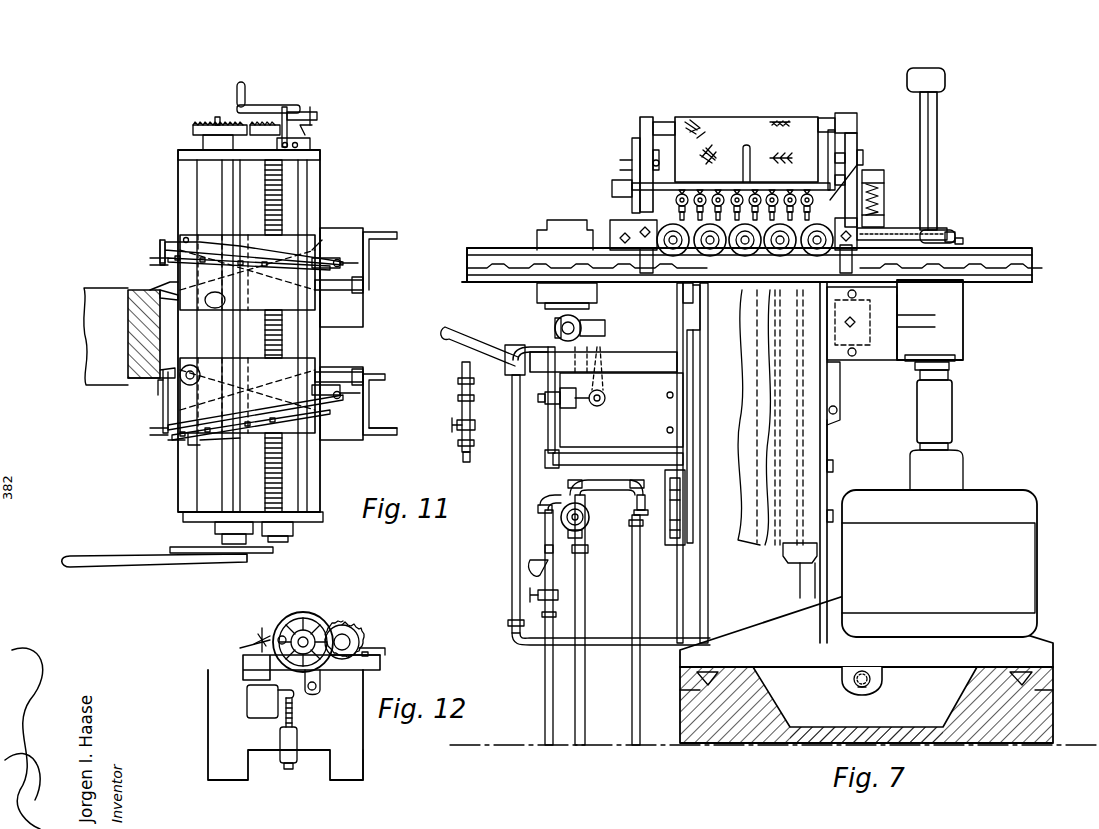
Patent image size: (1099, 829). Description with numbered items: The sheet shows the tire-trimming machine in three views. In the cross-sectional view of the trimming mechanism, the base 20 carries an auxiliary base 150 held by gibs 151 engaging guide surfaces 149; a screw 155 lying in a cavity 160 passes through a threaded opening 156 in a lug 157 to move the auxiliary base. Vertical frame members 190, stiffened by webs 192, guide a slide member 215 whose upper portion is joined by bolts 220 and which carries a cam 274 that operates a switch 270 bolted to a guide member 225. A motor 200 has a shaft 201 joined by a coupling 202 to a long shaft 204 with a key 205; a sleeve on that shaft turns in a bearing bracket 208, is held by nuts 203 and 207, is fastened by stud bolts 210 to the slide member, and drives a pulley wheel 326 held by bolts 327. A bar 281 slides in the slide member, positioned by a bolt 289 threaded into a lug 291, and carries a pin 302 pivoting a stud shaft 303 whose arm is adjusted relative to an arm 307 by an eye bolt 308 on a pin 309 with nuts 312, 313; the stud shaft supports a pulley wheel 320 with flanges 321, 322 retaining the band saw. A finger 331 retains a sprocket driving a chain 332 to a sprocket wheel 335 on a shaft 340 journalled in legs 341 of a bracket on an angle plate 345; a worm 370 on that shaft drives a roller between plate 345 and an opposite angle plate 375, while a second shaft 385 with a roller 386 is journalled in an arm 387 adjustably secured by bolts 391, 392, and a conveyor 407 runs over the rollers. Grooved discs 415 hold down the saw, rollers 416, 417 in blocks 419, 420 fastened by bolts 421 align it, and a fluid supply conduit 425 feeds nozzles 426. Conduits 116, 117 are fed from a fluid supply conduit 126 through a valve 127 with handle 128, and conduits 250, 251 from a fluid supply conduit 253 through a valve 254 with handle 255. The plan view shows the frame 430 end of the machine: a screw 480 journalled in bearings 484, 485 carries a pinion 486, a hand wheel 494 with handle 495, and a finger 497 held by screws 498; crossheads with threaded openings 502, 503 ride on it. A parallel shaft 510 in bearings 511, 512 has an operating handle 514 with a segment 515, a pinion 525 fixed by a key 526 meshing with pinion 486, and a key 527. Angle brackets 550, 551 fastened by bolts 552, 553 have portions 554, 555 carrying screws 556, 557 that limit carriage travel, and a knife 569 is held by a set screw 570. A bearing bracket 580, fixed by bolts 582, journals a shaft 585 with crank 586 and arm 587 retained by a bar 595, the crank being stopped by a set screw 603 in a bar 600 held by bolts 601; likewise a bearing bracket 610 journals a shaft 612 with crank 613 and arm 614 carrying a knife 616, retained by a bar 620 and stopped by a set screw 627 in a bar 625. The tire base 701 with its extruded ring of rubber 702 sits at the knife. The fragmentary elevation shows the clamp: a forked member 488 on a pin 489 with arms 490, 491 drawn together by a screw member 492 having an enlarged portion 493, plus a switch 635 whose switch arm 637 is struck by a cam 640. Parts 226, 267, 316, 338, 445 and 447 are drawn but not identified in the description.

In FIG. 7, the base 20 is at (1035, 733).
In FIG. 7, the conduit 116 is at (640, 668).
In FIG. 7, the conduit 117 is at (588, 700).
In FIG. 7, the fluid supply conduit 126 is at (545, 705).
In FIG. 7, the valve 127 is at (588, 530).
In FIG. 7, the handle 128 is at (535, 578).
In FIG. 7, the guide surfaces 149 is at (710, 672).
In FIG. 7, the auxiliary base 150 is at (1053, 648).
In FIG. 7, the gibs 151 is at (697, 685).
In FIG. 7, the screw 155 is at (870, 690).
In FIG. 7, the threaded opening 156 is at (845, 685).
In FIG. 7, the lug 157 is at (871, 677).
In FIG. 7, the cavity 160 is at (948, 667).
In FIG. 7, the frame member 190 is at (888, 296).
In FIG. 7, the webs 192 is at (817, 598).
In FIG. 7, the motor 200 is at (1037, 578).
In FIG. 7, the shaft 201 is at (950, 446).
In FIG. 7, the coupling 202 is at (952, 415).
In FIG. 7, the nut 203 is at (950, 366).
In FIG. 7, the shaft 204 is at (937, 150).
In FIG. 7, the key 205 is at (937, 128).
In FIG. 7, the nut 207 is at (948, 376).
In FIG. 7, the bearing bracket 208 is at (963, 320).
In FIG. 7, the stud bolts 210 is at (880, 360).
In FIG. 7, the slide member 215 is at (780, 462).
In FIG. 7, the bolts 220 is at (840, 408).
In FIG. 7, the guide member 225 is at (618, 451).
In FIG. 7, the lug 226 is at (833, 475).
In FIG. 7, the conduit 250 is at (512, 520).
In FIG. 7, the conduit 251 is at (552, 468).
In FIG. 7, the fluid supply conduit 253 is at (463, 458).
In FIG. 7, the valve 254 is at (500, 390).
In FIG. 7, the handle 255 is at (470, 342).
In FIG. 7, the pipe loop 267 is at (606, 480).
In FIG. 7, the switch 270 is at (665, 545).
In FIG. 7, the cam 274 is at (645, 495).
In FIG. 7, the bar 281 is at (610, 367).
In FIG. 7, the bolt 289 is at (741, 410).
In FIG. 7, the lug 291 is at (760, 416).
In FIG. 7, the pin 302 is at (555, 323).
In FIG. 7, the stud shaft 303 is at (525, 340).
In FIG. 7, the arm 307 is at (605, 395).
In FIG. 7, the eye bolt 308 is at (578, 405).
In FIG. 7, the pin 309 is at (600, 406).
In FIG. 7, the nut 312 is at (545, 402).
In FIG. 7, the nut 313 is at (560, 404).
In FIG. 7, the block 316 is at (537, 292).
In FIG. 7, the pulley wheel 320 is at (537, 240).
In FIG. 7, the flange 321 is at (469, 248).
In FIG. 7, the flange 322 is at (466, 282).
In FIG. 7, the pulley wheel 326 is at (1032, 250).
In FIG. 7, the bolts 327 is at (963, 241).
In FIG. 7, the finger 331 is at (958, 233).
In FIG. 7, the chain 332 is at (925, 238).
In FIG. 7, the sprocket wheel 335 is at (902, 230).
In FIG. 7, the plate 338 is at (838, 132).
In FIG. 7, the shaft 340 is at (884, 186).
In FIG. 7, the legs 341 is at (884, 175).
In FIG. 7, the angle plate 345 is at (857, 150).
In FIG. 7, the worm 370 is at (878, 196).
In FIG. 7, the angle plate 375 is at (632, 140).
In FIG. 7, the shaft 385 is at (852, 112).
In FIG. 7, the roller 386 is at (826, 118).
In FIG. 7, the arm 387 is at (645, 117).
In FIG. 7, the bolt 391 is at (662, 157).
In FIG. 7, the bolt 392 is at (845, 157).
In FIG. 7, the belt or conveyor 407 is at (795, 125).
In FIG. 7, the grooved discs 415 is at (860, 164).
In FIG. 7, the roller 416 is at (645, 270).
In FIG. 7, the roller 417 is at (764, 444).
In FIG. 7, the block 419 is at (812, 205).
In FIG. 7, the block 420 is at (615, 225).
In FIG. 7, the bolts 421 is at (612, 235).
In FIG. 7, the fluid supply conduit 425 is at (700, 195).
In FIG. 7, the nozzles 426 is at (740, 195).
In FIG. 12, the frame 430 is at (208, 778).
In FIG. 12, the frame leg 445 is at (363, 765).
In FIG. 12, the pump 447 is at (284, 765).
In FIG. 11, the screw 480 is at (282, 190).
In FIG. 12, the screw 480 is at (305, 630).
In FIG. 11, the bearing 484 is at (300, 143).
In FIG. 11, the bearing 485 is at (293, 530).
In FIG. 11, the pinion 486 is at (310, 128).
In FIG. 12, the forked member 488 is at (292, 705).
In FIG. 12, the pin 489 is at (315, 695).
In FIG. 12, the arm 490 is at (340, 635).
In FIG. 12, the arm 491 is at (282, 636).
In FIG. 12, the screw member 492 is at (255, 645).
In FIG. 12, the enlarged outer cylindrical portion 493 is at (262, 637).
In FIG. 11, the hand wheel 494 is at (262, 105).
In FIG. 12, the hand wheel 494 is at (322, 618).
In FIG. 11, the handle 495 is at (245, 88).
In FIG. 11, the finger 497 is at (290, 110).
In FIG. 11, the screws 498 is at (300, 147).
In FIG. 11, the opening 502 is at (312, 242).
In FIG. 11, the opening 503 is at (315, 365).
In FIG. 11, the shaft 510 is at (222, 470).
In FIG. 12, the shaft 510 is at (355, 638).
In FIG. 11, the bearing 511 is at (215, 148).
In FIG. 11, the bearing 512 is at (215, 527).
In FIG. 11, the operating handle 514 is at (170, 567).
In FIG. 11, the segment 515 is at (262, 554).
In FIG. 11, the pinion 525 is at (195, 130).
In FIG. 12, the pinion 525 is at (358, 652).
In FIG. 11, the key 526 is at (215, 118).
In FIG. 12, the key 526 is at (368, 654).
In FIG. 11, the key 527 is at (255, 336).
In FIG. 11, the angle bracket 550 is at (175, 240).
In FIG. 11, the angle bracket 551 is at (188, 440).
In FIG. 11, the bolts 552 is at (185, 237).
In FIG. 11, the bolts 553 is at (210, 443).
In FIG. 11, the portion 554 is at (160, 245).
In FIG. 11, the portion 555 is at (168, 441).
In FIG. 11, the screw 556 is at (168, 260).
In FIG. 11, the screw 557 is at (163, 415).
In FIG. 11, the knife 569 is at (170, 378).
In FIG. 11, the set screw 570 is at (132, 348).
In FIG. 11, the bearing bracket 580 is at (318, 298).
In FIG. 11, the bolts 582 is at (168, 292).
In FIG. 11, the shaft 585 is at (368, 284).
In FIG. 11, the crank 586 is at (397, 235).
In FIG. 11, the arm 587 is at (150, 288).
In FIG. 11, the bar 595 is at (150, 260).
In FIG. 11, the bar 600 is at (338, 258).
In FIG. 11, the bolts 601 is at (318, 238).
In FIG. 11, the set screw 603 is at (358, 263).
In FIG. 11, the bearing bracket 610 is at (335, 385).
In FIG. 11, the shaft 612 is at (375, 382).
In FIG. 11, the crank 613 is at (392, 435).
In FIG. 11, the arm 614 is at (170, 398).
In FIG. 11, the knife 616 is at (178, 433).
In FIG. 11, the bar 620 is at (150, 430).
In FIG. 11, the bar 625 is at (337, 398).
In FIG. 11, the set screw 627 is at (340, 390).
In FIG. 12, the electrical contact switch 635 is at (247, 712).
In FIG. 12, the switch arm 637 is at (278, 692).
In FIG. 12, the switch operating cam 640 is at (243, 660).
In FIG. 11, the tire base 701 is at (140, 380).
In FIG. 11, the extruded ring of rubber 702 is at (84, 322).